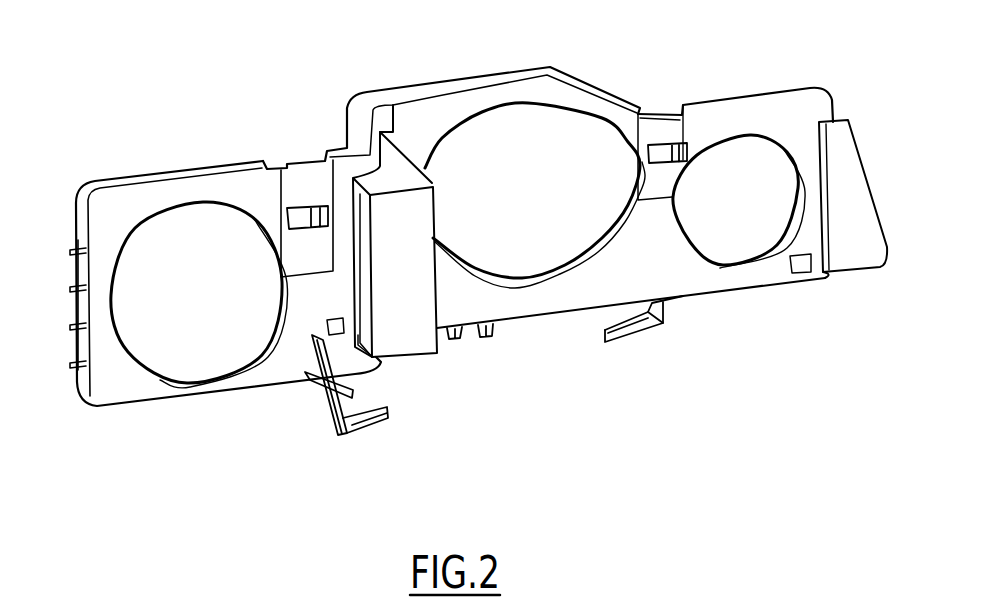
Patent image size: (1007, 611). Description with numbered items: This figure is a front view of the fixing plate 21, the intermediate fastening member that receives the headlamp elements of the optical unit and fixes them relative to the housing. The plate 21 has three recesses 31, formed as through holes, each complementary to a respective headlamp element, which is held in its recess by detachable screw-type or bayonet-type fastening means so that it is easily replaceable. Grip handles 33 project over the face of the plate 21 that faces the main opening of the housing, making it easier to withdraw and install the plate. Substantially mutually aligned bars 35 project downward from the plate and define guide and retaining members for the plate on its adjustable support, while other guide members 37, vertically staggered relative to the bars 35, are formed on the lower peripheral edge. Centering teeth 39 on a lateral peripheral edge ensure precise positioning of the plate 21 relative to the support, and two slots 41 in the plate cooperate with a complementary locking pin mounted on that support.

The fixing plate 21 is at (834, 80).
The recesses 31 is at (199, 295).
The grip handles 33 is at (425, 225).
The bars 35 is at (363, 430).
The guide members 37 is at (485, 338).
The centering teeth 39 is at (70, 252).
The slots 41 is at (303, 212).